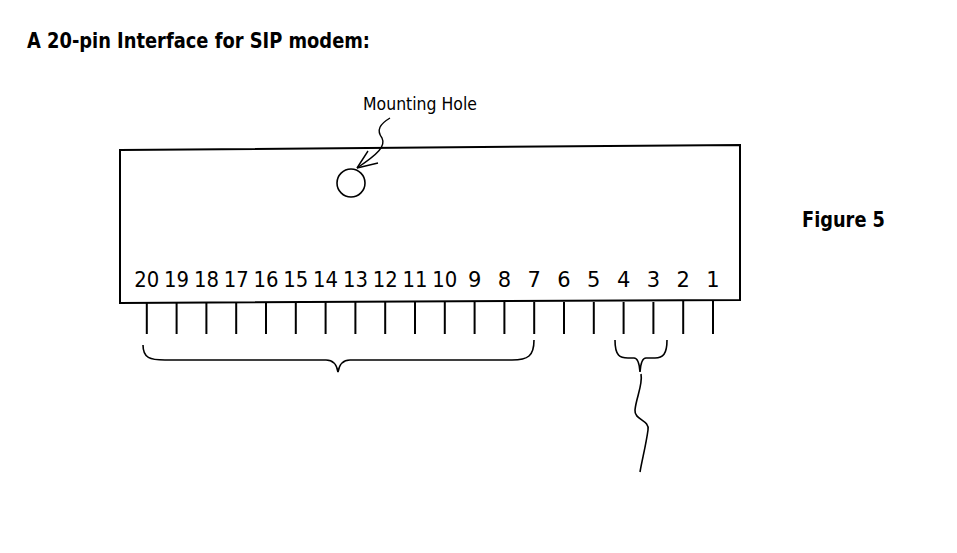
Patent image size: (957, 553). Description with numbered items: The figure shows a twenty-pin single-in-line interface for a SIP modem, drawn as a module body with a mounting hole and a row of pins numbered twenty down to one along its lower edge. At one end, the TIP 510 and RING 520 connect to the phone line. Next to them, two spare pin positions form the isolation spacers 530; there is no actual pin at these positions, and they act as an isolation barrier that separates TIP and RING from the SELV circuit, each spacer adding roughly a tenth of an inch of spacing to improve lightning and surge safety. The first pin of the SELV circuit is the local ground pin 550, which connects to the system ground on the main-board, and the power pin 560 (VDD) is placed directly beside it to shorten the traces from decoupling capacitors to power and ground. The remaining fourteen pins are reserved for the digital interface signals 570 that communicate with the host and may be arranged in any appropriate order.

The TIP 510 is at (755, 442).
The RING 520 is at (700, 457).
The isolation spacer 530 is at (758, 507).
The ground pin 550 is at (618, 457).
The power pin 560 is at (563, 457).
The digital interface signals 570 is at (344, 428).